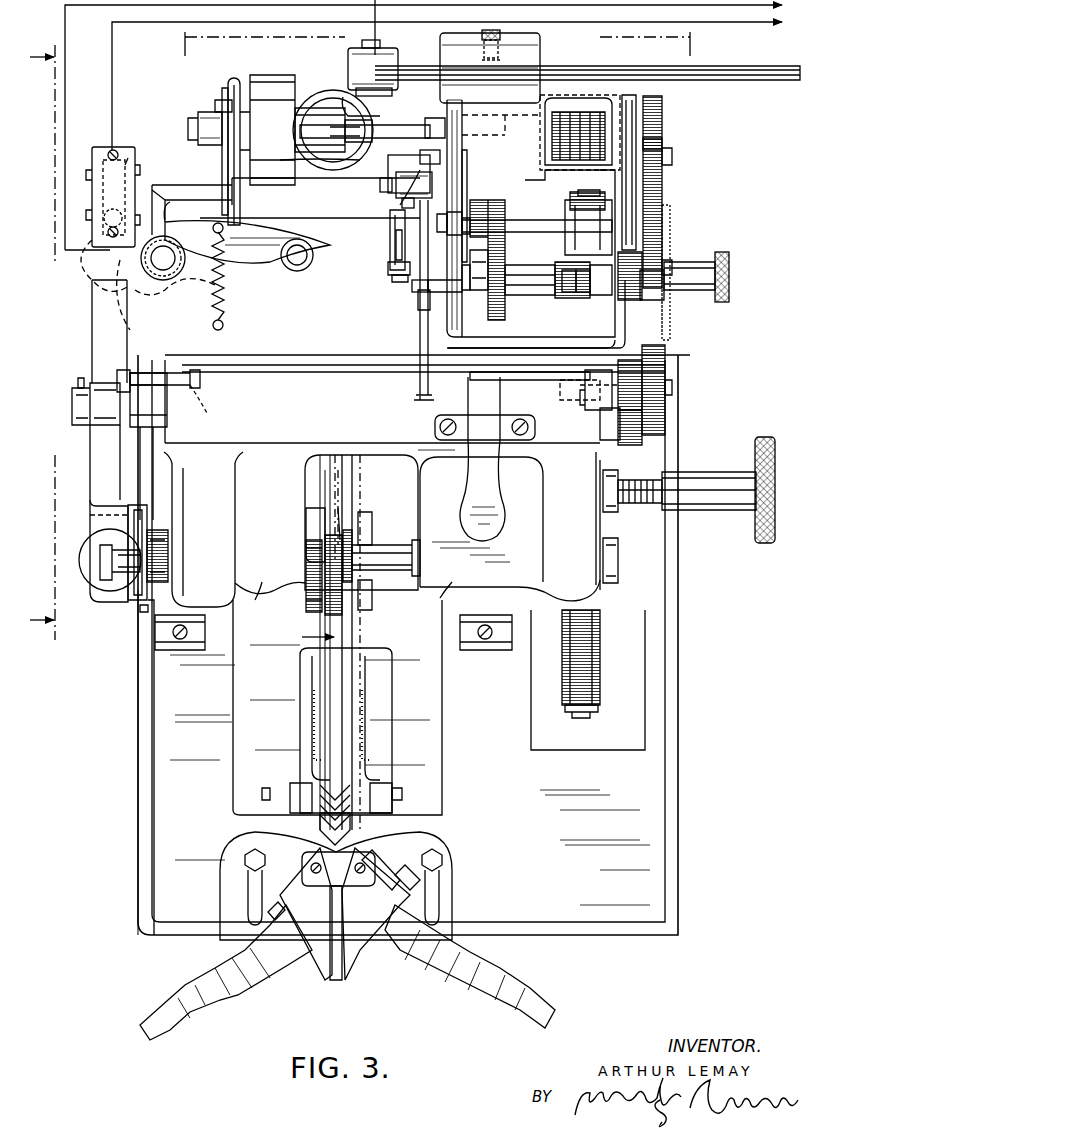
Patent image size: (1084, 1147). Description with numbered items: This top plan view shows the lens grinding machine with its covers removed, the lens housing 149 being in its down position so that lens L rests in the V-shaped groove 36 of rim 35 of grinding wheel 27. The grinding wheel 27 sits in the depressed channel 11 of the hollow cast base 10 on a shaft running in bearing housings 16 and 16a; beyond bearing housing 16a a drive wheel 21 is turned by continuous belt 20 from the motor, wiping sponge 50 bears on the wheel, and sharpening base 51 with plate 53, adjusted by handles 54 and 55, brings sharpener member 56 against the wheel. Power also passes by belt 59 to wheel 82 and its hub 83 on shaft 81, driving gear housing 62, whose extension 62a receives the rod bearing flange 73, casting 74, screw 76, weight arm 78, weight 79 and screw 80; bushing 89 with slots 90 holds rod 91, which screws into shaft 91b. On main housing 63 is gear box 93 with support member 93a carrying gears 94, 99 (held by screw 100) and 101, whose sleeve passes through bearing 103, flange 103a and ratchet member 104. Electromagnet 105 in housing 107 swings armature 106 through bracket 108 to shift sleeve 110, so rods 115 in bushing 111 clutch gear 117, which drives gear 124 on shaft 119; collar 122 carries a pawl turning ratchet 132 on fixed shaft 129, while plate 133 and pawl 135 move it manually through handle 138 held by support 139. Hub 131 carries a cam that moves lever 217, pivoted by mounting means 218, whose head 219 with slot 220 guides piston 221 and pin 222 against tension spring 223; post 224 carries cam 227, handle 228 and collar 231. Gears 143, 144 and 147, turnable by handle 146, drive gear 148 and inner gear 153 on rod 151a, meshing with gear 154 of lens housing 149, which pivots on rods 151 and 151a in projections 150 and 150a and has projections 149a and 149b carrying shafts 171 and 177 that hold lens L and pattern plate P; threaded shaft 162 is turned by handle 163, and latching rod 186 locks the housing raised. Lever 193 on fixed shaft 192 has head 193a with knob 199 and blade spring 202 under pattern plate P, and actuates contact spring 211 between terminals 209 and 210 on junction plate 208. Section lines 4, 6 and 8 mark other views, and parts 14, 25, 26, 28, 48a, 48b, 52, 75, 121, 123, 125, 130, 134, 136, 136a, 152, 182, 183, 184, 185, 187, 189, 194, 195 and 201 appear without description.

The section line 4- 4 is at (41, 338).
The section line 6- 6 is at (445, 44).
The section line 8- 8 is at (375, 12).
The base 10 is at (672, 815).
The depressed channel 11 is at (432, 800).
The pillar 14 is at (640, 722).
The bearing housing 16 is at (333, 632).
The bearing housing 16a is at (462, 600).
The continuous belt 20 is at (581, 718).
The drive wheel 21 is at (600, 698).
The collar 25 is at (372, 518).
The guide rod 26 is at (320, 478).
The grinding wheel 27 is at (352, 822).
The guide rod 28 is at (355, 487).
The rim 35 is at (352, 648).
The V-shaped groove 36 is at (390, 792).
The guide 48a is at (380, 696).
The stop 48b is at (400, 788).
The wiping sponge 50 is at (372, 720).
The base 51 is at (452, 845).
The cutter holder 52 is at (356, 982).
The plate 53 is at (320, 972).
The handle 54 is at (548, 1015).
The handle 55 is at (200, 985).
The sharpener member 56 is at (342, 926).
The continuous belt 59 is at (236, 80).
The gear housing 62 is at (270, 75).
The extension 62a is at (352, 102).
The main housing 63 is at (142, 334).
The flange 73 is at (372, 112).
The casting 74 is at (356, 68).
The cap 75 is at (362, 46).
The screw 76 is at (370, 50).
The weight arm 78 is at (735, 72).
The weight 79 is at (520, 40).
The screw 80 is at (492, 30).
The shaft 81 is at (198, 128).
The wheel 82 is at (222, 95).
The hub 83 is at (215, 106).
The bushing 89 is at (335, 160).
The longitudinal slots 90 is at (350, 130).
The rod 91 is at (400, 128).
The shaft 91b is at (432, 118).
The gear box 93 is at (540, 340).
The supplementary gear support member 93a is at (632, 95).
The gear 94 is at (662, 108).
The gear 99 is at (660, 150).
The screw 100 is at (668, 152).
The gear 101 is at (660, 242).
The bearing 103 is at (602, 245).
The flange 103a is at (602, 186).
The ratchet member 104 is at (575, 192).
The electromagnet 105 is at (552, 140).
The armature 106 is at (545, 125).
The housing 107 is at (575, 108).
The bracket 108 is at (540, 180).
The sleeve 110 is at (540, 275).
The bushing 111 is at (572, 278).
The rods 115 is at (565, 290).
The gear 117 is at (506, 228).
The shaft 119 is at (582, 292).
The bearing 121 is at (468, 292).
The collar 122 is at (420, 310).
The bearing 123 is at (598, 298).
The gear 124 is at (505, 262).
The gear 125 is at (672, 385).
The fixed shaft 129 is at (380, 185).
The block 130 is at (388, 170).
The hub 131 is at (415, 155).
The ratchet 132 is at (456, 150).
The plate 133 is at (458, 184).
The collar 134 is at (414, 185).
The pawl 135 is at (467, 172).
The pin 136 is at (402, 203).
The hub 136a is at (450, 212).
The handle 138 is at (414, 398).
The support means 139 is at (414, 292).
The gear 143 is at (648, 265).
The gear 144 is at (612, 340).
The handle 146 is at (694, 300).
The gear 147 is at (655, 290).
The gear 148 is at (658, 412).
The lens housing 149 is at (603, 603).
The forward projection 149a is at (274, 603).
The forward projection 149b is at (420, 590).
The forward projection 150 is at (152, 405).
The forward projection 150a is at (592, 410).
The rod 151 is at (187, 394).
The rod 151a is at (562, 392).
The collar 152 is at (118, 375).
The inner gear 153 is at (645, 360).
The gear 154 is at (635, 447).
The threaded shaft 162 is at (633, 508).
The handle 163 is at (712, 512).
The shaft 171 is at (392, 576).
The shaft 177 is at (308, 545).
The collar 182 is at (352, 540).
The clamp 183 is at (318, 540).
The bearing 184 is at (170, 550).
The bracket 185 is at (136, 600).
The latching rod 186 is at (500, 378).
The pendant 187 is at (493, 470).
The plate 189 is at (458, 420).
The fixed shaft 192 is at (150, 436).
The lever 193 is at (98, 458).
The head 193a is at (102, 510).
The bolt 194 is at (90, 424).
The pin 195 is at (82, 385).
The turning knob 199 is at (90, 580).
The plate 201 is at (140, 610).
The blade spring 202 is at (150, 612).
The junction plate 208 is at (120, 148).
The terminal 209 is at (110, 150).
The terminal 210 is at (108, 236).
The contact spring 211 is at (148, 153).
The lever 217 is at (250, 240).
The mounting means 218 is at (296, 264).
The head 219 is at (392, 278).
The longitudinal slot 220 is at (392, 262).
The piston 221 is at (390, 218).
The pin 222 is at (396, 238).
The tension spring 223 is at (224, 296).
The post 224 is at (165, 266).
The cam 227 is at (180, 208).
The turnable handle 228 is at (84, 308).
The collar 231 is at (165, 325).
The lens L is at (342, 512).
The pattern plate P is at (120, 762).